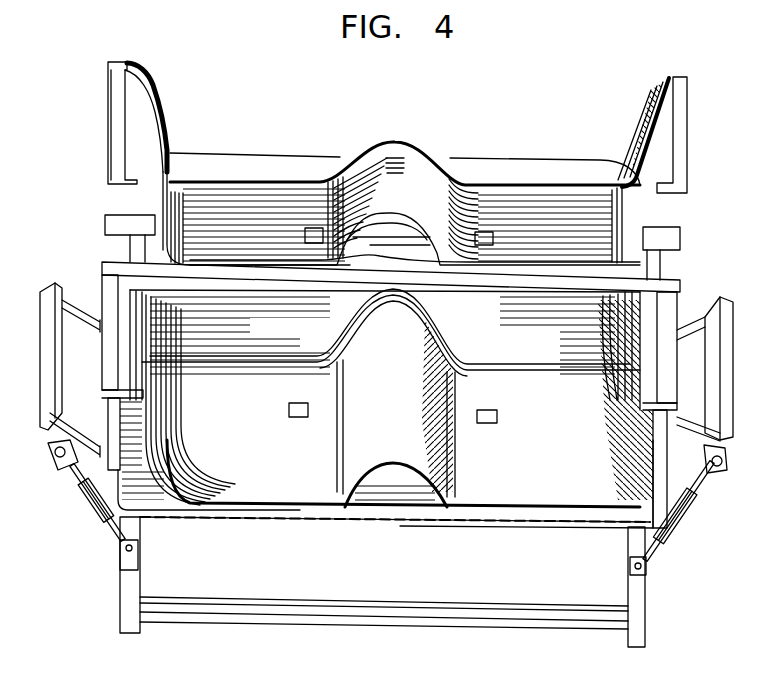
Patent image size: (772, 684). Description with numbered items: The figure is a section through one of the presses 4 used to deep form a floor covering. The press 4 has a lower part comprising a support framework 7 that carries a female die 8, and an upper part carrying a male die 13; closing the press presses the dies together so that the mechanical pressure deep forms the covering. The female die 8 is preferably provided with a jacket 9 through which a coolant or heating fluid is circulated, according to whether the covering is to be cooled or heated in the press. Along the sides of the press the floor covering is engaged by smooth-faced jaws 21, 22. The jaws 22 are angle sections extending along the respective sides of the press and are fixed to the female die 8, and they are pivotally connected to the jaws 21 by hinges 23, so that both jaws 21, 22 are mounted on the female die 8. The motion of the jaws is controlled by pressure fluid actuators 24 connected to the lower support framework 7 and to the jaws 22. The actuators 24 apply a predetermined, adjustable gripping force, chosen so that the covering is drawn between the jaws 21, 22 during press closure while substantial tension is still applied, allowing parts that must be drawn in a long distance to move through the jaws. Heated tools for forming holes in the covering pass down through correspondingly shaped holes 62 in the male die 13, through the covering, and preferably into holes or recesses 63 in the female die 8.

The press 4 is at (668, 72).
The support framework 7 is at (642, 630).
The female die 8 is at (391, 395).
The jacket 9 is at (607, 510).
The male die 13 is at (397, 163).
The jaw 21 is at (665, 270).
The jaw 22 is at (660, 233).
The hinge 23 is at (105, 446).
The pressure fluid actuator 24 is at (92, 505).
The hole 62 is at (323, 232).
The hole or recess 63 is at (298, 417).